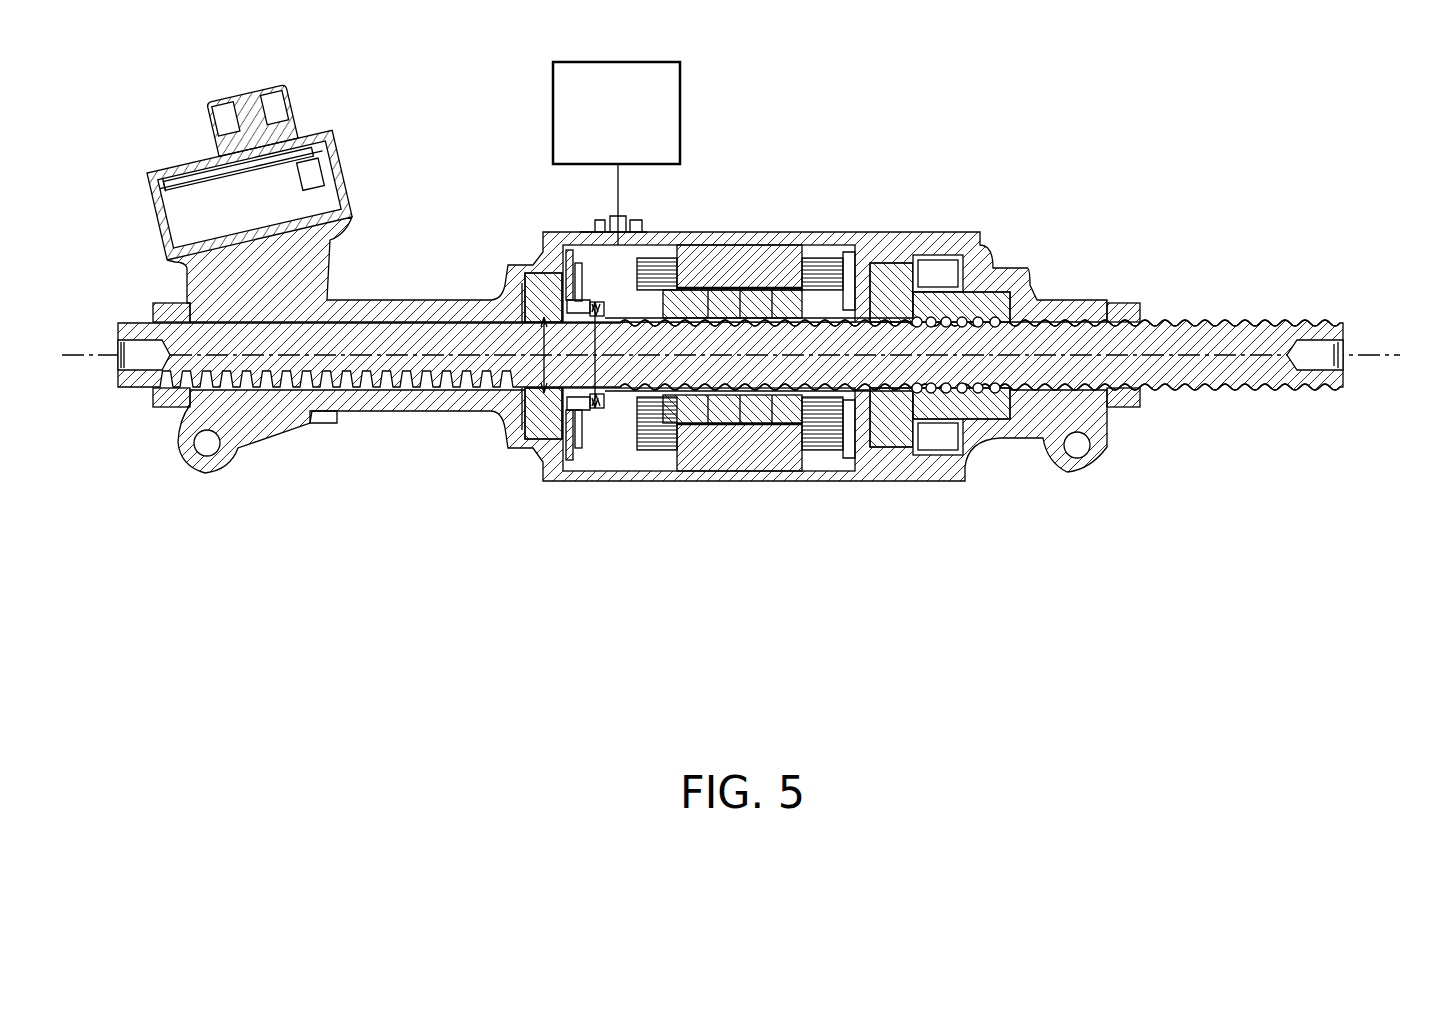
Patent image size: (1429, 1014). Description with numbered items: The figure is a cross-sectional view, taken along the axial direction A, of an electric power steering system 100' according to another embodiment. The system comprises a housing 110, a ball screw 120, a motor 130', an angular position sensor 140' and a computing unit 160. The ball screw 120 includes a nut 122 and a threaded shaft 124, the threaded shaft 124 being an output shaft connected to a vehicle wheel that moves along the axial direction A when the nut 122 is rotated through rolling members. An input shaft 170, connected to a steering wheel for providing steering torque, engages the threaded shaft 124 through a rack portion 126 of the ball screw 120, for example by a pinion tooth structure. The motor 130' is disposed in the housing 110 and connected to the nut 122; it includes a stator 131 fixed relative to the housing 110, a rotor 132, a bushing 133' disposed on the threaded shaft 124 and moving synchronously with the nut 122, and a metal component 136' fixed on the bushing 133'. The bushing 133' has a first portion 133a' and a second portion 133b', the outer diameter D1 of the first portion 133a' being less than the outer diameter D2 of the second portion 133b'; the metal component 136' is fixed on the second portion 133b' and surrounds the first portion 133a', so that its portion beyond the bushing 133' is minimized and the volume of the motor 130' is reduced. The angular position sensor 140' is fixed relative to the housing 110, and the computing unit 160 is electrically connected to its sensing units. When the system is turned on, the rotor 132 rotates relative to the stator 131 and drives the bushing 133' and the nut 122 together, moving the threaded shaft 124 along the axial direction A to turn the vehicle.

The electric power steering system 100' is at (1204, 89).
The housing 110 is at (900, 470).
The ball screw 120 is at (730, 465).
The nut 122 is at (988, 422).
The threaded shaft 124 is at (1247, 343).
The rack portion 126 is at (345, 385).
The motor 130' is at (689, 461).
The stator 131 is at (735, 475).
The rotor 132 is at (760, 425).
The bushing 133' is at (644, 460).
The first portion 133a' is at (618, 430).
The second portion 133b' is at (646, 416).
The metal component 136' is at (568, 429).
The angular position sensor 140' is at (518, 390).
The computing unit 160 is at (683, 101).
The input shaft 170 is at (245, 100).
The axial direction A is at (90, 368).
The outer diameter of the first portion D1 is at (560, 355).
The outer diameter of the second portion D2 is at (611, 355).